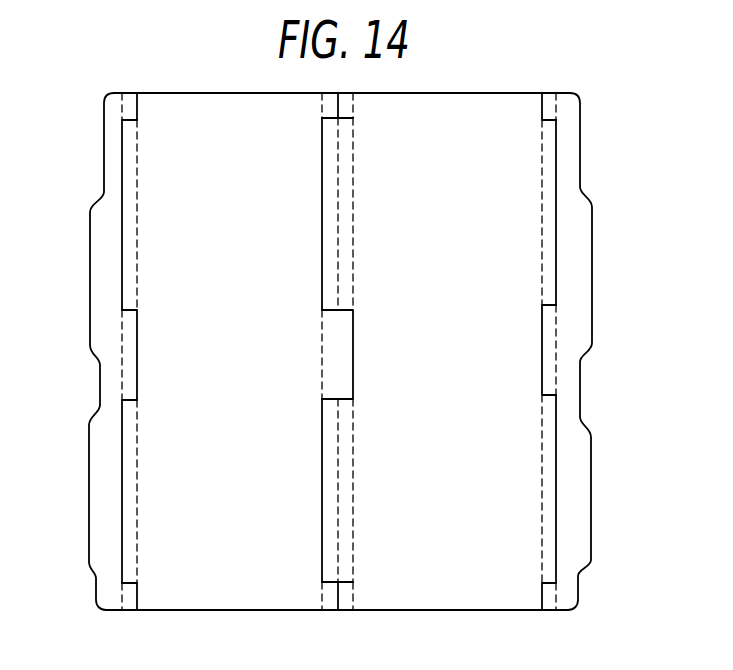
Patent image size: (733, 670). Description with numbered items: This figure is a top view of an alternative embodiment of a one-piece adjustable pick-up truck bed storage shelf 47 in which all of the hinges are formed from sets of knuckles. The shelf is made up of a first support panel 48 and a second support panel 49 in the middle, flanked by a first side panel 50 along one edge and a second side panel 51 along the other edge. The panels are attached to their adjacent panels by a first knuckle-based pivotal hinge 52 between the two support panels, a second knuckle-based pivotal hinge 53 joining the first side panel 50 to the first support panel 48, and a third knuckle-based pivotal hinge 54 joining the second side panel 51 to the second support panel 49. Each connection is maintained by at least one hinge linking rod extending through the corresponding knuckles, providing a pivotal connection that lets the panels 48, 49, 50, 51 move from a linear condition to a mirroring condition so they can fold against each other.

The one-piece adjustable pick-up truck bed storage shelf 47 is at (598, 67).
The first support panel 48 is at (198, 110).
The second support panel 49 is at (502, 102).
The first side panel 50 is at (100, 243).
The second side panel 51 is at (570, 163).
The first knuckle-based pivotal hinge 52 is at (333, 613).
The second knuckle-based pivotal hinge 53 is at (127, 614).
The third knuckle-based pivotal hinge 54 is at (547, 613).